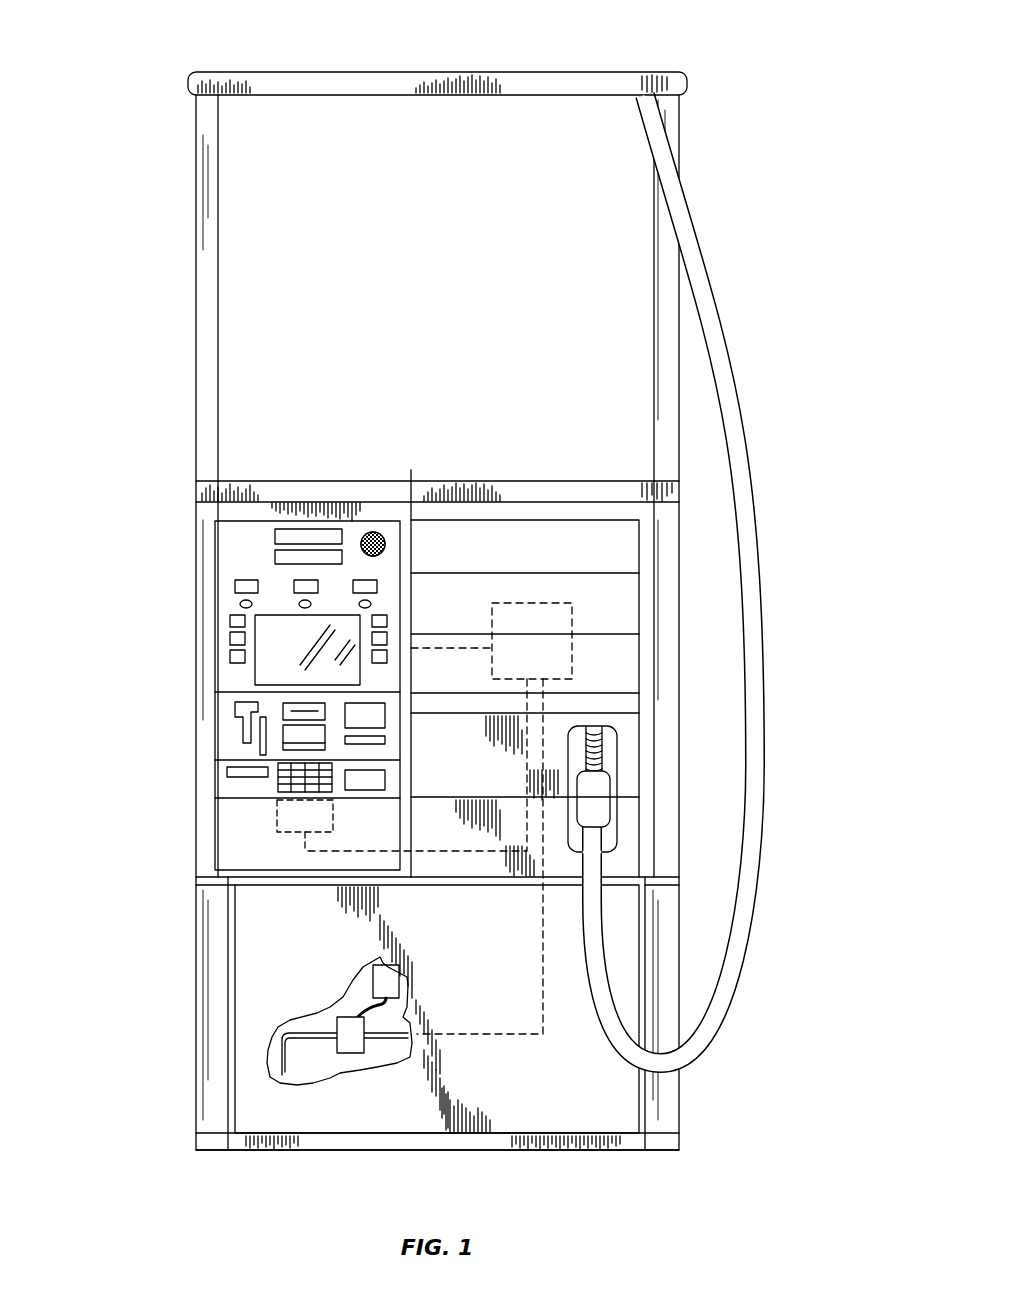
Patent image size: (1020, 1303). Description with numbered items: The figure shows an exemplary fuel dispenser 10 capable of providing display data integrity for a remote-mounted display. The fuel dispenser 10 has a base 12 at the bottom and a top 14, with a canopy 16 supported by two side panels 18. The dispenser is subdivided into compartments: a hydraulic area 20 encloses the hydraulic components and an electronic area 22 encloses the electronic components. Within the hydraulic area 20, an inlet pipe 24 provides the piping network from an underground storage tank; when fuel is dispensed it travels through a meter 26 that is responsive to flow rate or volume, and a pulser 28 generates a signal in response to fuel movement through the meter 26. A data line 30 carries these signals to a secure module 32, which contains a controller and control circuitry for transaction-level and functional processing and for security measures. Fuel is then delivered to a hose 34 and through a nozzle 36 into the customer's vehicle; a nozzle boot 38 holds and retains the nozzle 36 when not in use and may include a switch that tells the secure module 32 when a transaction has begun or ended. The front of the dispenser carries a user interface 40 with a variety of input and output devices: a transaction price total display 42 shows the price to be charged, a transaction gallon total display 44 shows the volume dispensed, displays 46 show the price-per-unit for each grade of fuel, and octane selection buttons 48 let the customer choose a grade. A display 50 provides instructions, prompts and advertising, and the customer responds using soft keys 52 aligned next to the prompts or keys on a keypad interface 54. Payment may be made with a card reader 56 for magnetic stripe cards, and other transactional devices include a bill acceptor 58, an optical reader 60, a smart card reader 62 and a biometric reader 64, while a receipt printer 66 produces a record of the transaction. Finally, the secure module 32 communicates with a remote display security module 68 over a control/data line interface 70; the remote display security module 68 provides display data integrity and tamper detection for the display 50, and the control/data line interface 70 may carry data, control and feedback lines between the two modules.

The fuel dispenser 10 is at (700, 61).
The base 12 is at (565, 1150).
The top 14 is at (433, 481).
The canopy 16 is at (357, 72).
The side panels 18 is at (197, 276).
The hydraulic area 20 is at (591, 1121).
The electronic area 22 is at (517, 556).
The inlet pipe 24 is at (280, 1050).
The meter 26 is at (352, 1050).
The pulser 28 is at (380, 985).
The data line 30 is at (455, 1034).
The secure module 32 is at (518, 666).
The hose 34 is at (755, 698).
The nozzle 36 is at (595, 796).
The nozzle boot 38 is at (610, 838).
The user interface 40 is at (166, 618).
The transaction price total display 42 is at (275, 533).
The transaction gallon total display 44 is at (275, 557).
The displays 46 is at (368, 581).
The octane selection buttons 48 is at (371, 603).
The display 50 is at (277, 630).
The soft keys 52 is at (232, 659).
The keypad interface 54 is at (285, 781).
The card reader 56 is at (245, 722).
The bill acceptor 58 is at (288, 703).
The optical reader 60 is at (317, 737).
The smart card reader 62 is at (365, 712).
The biometric reader 64 is at (365, 740).
The receipt printer 66 is at (235, 770).
The remote display security module 68 is at (291, 826).
The control/data line interface 70 is at (340, 851).